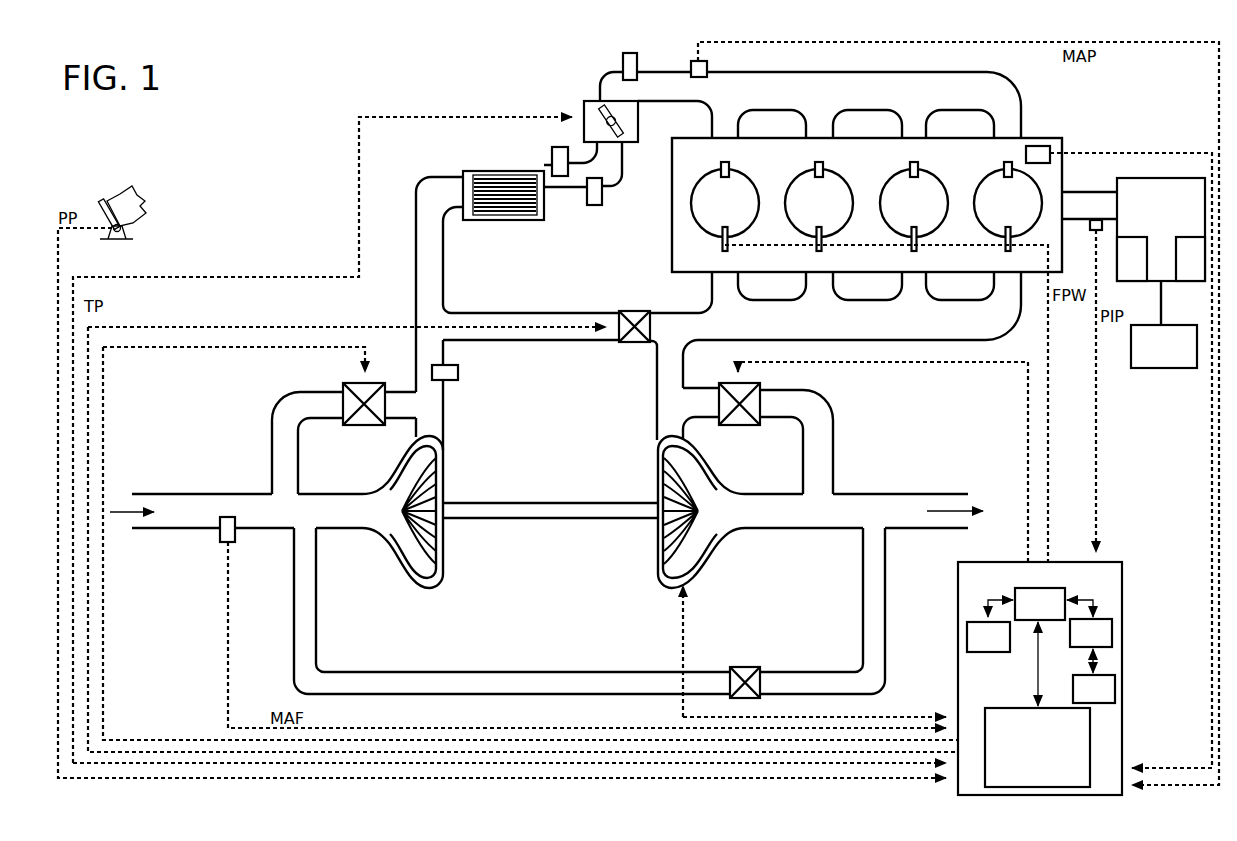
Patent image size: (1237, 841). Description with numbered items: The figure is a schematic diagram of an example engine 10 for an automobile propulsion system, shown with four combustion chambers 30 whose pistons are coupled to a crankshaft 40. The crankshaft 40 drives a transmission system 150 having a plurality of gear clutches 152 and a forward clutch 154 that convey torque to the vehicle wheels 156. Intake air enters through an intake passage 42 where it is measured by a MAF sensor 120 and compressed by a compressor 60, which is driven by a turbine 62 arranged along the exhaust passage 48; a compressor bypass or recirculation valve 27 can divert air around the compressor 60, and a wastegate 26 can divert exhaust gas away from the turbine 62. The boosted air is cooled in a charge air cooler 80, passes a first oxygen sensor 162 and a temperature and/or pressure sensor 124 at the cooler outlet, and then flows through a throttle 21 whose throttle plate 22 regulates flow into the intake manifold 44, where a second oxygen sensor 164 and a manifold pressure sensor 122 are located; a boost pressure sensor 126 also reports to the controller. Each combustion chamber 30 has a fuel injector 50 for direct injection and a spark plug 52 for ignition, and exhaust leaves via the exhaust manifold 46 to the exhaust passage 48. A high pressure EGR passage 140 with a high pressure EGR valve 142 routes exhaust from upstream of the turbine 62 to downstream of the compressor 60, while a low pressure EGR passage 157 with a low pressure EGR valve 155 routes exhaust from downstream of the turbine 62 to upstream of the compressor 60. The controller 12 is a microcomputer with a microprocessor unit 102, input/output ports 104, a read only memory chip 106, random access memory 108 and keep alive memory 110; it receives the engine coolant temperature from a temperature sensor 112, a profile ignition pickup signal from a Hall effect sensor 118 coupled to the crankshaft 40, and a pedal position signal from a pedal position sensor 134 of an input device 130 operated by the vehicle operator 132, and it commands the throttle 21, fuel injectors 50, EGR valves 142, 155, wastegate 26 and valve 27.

The engine 10 is at (867, 205).
The controller 12 is at (1029, 678).
The throttle 21 is at (605, 106).
The throttle plate 22 is at (624, 136).
The wastegate 26 is at (762, 391).
The compressor bypass or recirculation valve 27 is at (343, 392).
The combustion chamber 30 is at (866, 203).
The crankshaft 40 is at (1078, 192).
The intake passage 42 is at (286, 352).
The intake manifold 44 is at (865, 109).
The exhaust manifold 46 is at (852, 330).
The exhaust passage 48 is at (821, 442).
The fuel injector 50 is at (722, 250).
The spark plug 52 is at (729, 165).
The compressor 60 is at (403, 552).
The turbine 62 is at (700, 466).
The charge air cooler 80 is at (521, 171).
The microprocessor unit 102 is at (1012, 596).
The input/output ports 104 is at (1037, 747).
The read only memory chip 106 is at (967, 642).
The random access memory 108 is at (1110, 624).
The keep alive memory 110 is at (1113, 678).
The temperature sensor 112 is at (1040, 146).
The Hall effect sensor 118 is at (1094, 232).
The MAF sensor 120 is at (236, 540).
The sensor 122 is at (706, 63).
The temperature and/or pressure sensor 124 is at (594, 205).
The boost pressure sensor 126 is at (458, 376).
The input device 130 is at (116, 204).
The vehicle operator 132 is at (140, 197).
The pedal position sensor 134 is at (127, 231).
The high pressure EGR passage 140 is at (531, 318).
The high pressure EGR valve 142 is at (644, 311).
The transmission system 150 is at (1161, 229).
The gear clutches 152 is at (1132, 259).
The forward clutch 154 is at (1191, 259).
The low pressure EGR valve 155 is at (764, 667).
The vehicle wheels 156 is at (1164, 346).
The low pressure EGR passage 157 is at (467, 672).
The first oxygen sensor 162 is at (553, 149).
The second oxygen sensor 164 is at (623, 58).